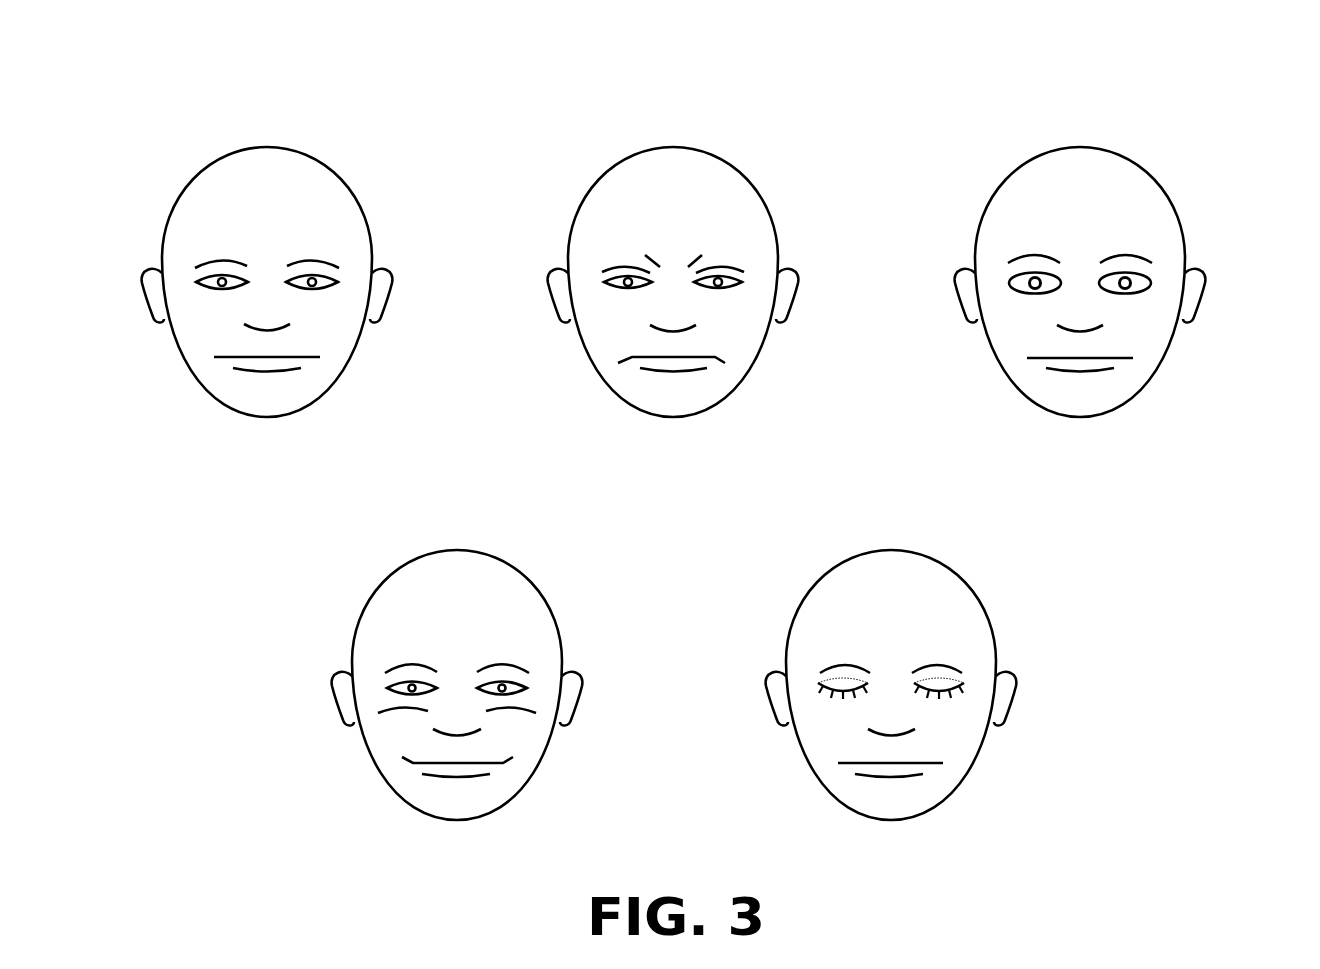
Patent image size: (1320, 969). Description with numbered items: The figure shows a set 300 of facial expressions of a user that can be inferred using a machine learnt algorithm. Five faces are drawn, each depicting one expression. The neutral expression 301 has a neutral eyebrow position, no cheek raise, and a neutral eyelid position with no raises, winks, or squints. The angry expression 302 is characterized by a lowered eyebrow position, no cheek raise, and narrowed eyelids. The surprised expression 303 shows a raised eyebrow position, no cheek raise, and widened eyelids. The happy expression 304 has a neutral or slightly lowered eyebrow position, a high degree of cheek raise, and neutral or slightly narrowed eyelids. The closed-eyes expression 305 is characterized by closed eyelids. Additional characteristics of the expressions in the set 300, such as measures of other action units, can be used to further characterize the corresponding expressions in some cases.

The set of facial expressions 300 is at (1210, 63).
The neutral expression 301 is at (265, 108).
The angry expression 302 is at (669, 105).
The surprised expression 303 is at (1073, 109).
The happy expression 304 is at (454, 512).
The closed-eyes expression 305 is at (884, 510).